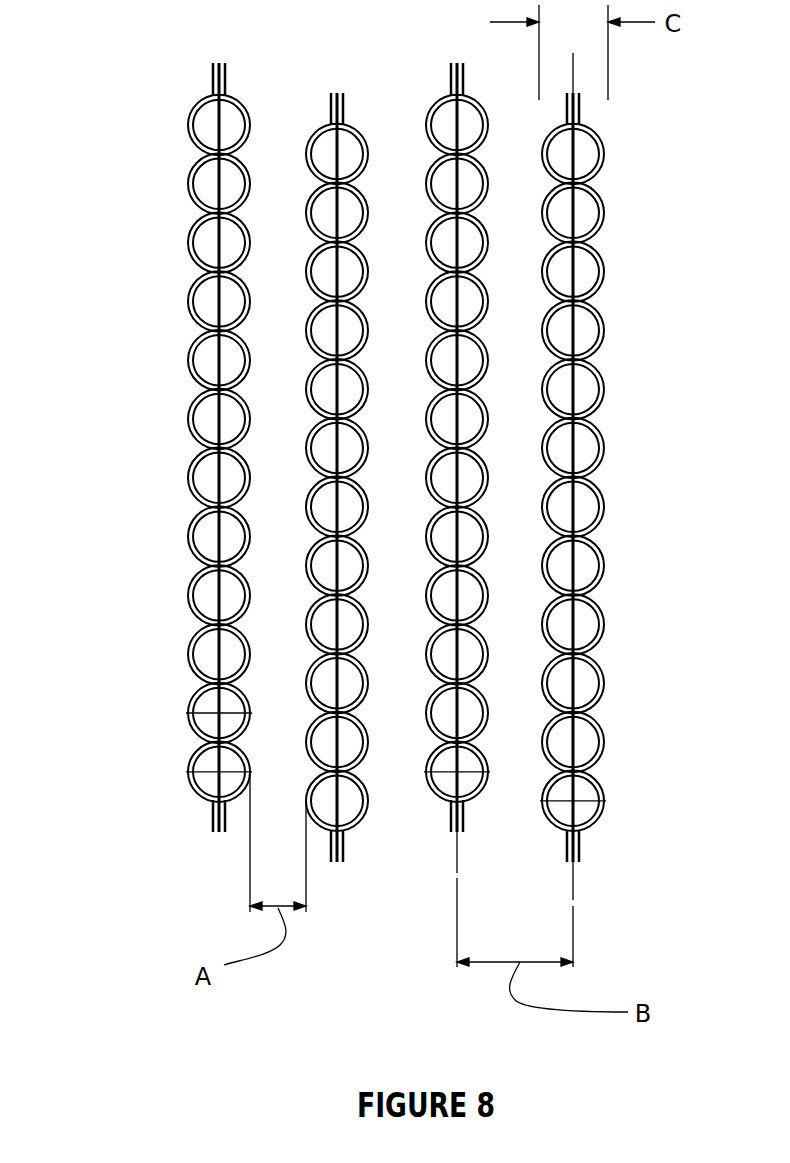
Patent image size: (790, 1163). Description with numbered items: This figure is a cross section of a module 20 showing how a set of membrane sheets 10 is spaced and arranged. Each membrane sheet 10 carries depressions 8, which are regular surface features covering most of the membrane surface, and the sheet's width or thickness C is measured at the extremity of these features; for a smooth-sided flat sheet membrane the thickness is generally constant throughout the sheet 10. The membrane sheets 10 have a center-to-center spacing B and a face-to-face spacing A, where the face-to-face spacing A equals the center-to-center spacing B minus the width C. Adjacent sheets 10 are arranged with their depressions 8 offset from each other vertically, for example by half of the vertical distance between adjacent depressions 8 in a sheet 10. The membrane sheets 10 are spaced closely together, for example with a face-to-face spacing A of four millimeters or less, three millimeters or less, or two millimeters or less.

The module 20 is at (384, 462).
The membrane sheet 10 is at (411, 462).
The depression 8 is at (597, 662).